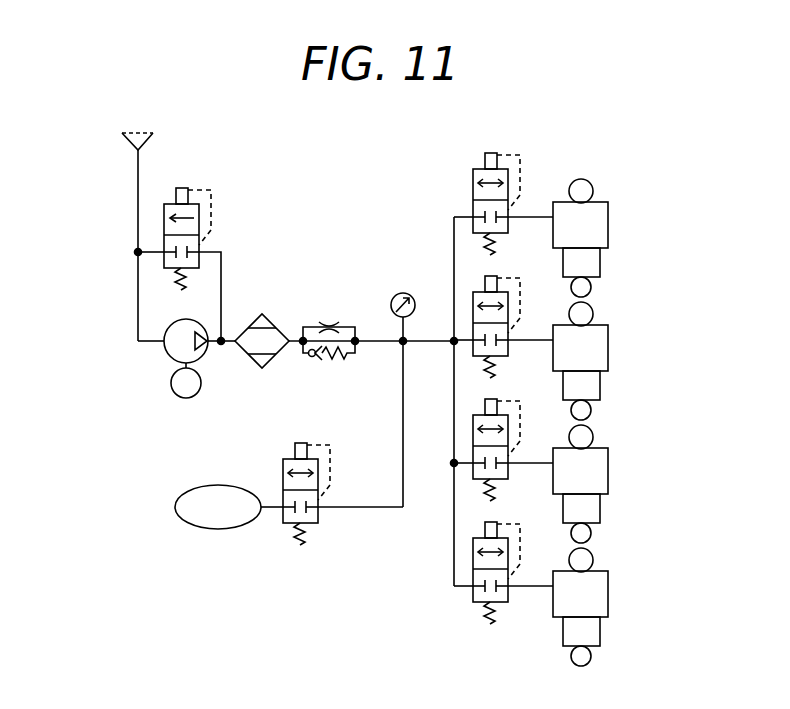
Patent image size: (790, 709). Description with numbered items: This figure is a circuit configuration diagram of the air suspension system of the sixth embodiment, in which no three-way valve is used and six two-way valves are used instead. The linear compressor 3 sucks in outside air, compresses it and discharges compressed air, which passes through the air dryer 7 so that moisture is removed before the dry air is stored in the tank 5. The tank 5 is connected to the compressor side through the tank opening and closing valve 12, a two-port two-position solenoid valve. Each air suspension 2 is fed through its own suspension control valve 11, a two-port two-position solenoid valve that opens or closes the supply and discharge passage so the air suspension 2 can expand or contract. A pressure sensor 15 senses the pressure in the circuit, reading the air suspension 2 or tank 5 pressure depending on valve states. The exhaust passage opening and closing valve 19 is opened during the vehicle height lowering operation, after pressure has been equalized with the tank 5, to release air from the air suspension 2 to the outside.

The air suspension 2 is at (608, 202).
The linear compressor 3 is at (168, 356).
The tank 5 is at (219, 530).
The air dryer 7 is at (275, 328).
The suspension control valve 11 is at (473, 175).
The tank opening and closing valve 12 is at (283, 462).
The pressure sensor 15 is at (398, 294).
The exhaust passage opening and closing valve 19 is at (164, 207).